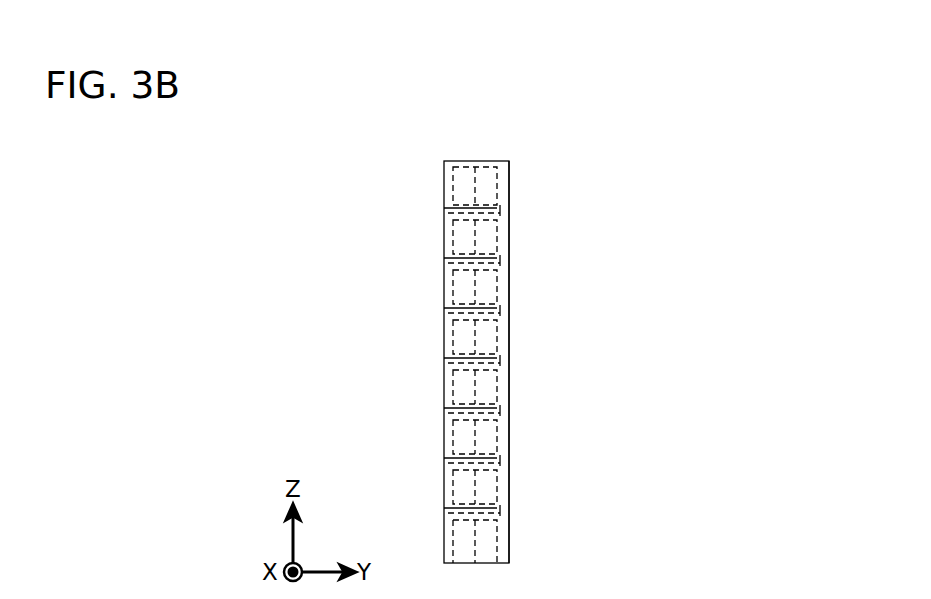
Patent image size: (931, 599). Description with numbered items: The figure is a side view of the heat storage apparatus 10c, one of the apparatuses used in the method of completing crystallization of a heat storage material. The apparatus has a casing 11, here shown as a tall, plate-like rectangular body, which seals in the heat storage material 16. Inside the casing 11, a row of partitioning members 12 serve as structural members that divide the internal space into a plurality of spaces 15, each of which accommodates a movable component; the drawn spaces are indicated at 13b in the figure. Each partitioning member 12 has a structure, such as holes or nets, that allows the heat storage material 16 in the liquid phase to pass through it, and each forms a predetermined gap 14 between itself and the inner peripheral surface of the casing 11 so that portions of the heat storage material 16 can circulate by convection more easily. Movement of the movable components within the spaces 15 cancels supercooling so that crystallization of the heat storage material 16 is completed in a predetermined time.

The heat storage apparatus 10c is at (430, 103).
The casing 11 is at (444, 179).
The partitioning member 12 is at (444, 208).
The light transmissive member 13b is at (488, 435).
The gap 14 is at (503, 207).
The space 15 is at (487, 186).
The heat storage material 16 is at (510, 233).